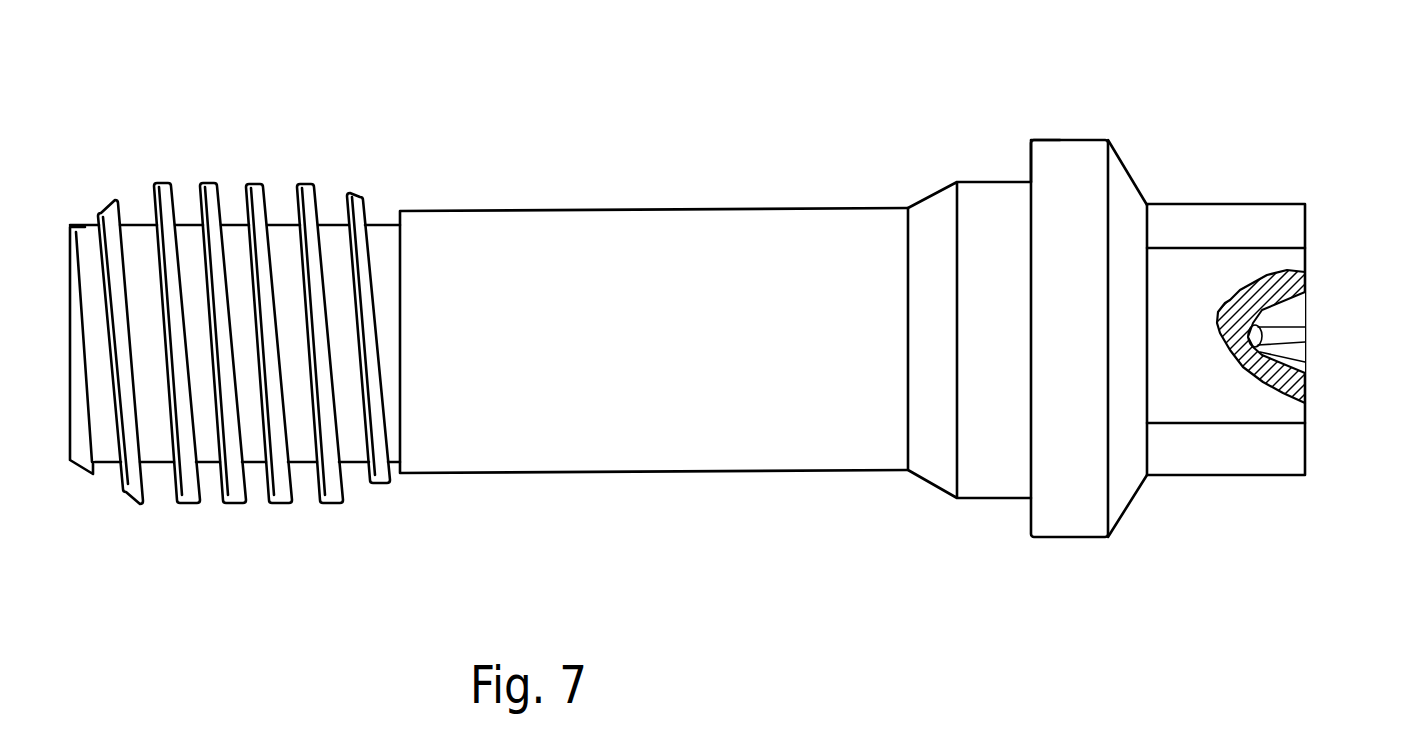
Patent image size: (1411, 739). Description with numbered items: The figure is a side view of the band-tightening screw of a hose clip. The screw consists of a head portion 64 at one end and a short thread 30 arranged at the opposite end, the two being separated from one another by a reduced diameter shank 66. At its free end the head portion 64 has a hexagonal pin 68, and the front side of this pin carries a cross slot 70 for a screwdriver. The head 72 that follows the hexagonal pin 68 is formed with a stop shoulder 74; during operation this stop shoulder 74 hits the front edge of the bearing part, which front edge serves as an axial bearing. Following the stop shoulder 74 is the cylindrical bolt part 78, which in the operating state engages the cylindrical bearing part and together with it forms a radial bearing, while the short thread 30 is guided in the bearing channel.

The short thread 30 is at (258, 218).
The reduced diameter shank 66 is at (722, 248).
The cylindrical bolt part 78 is at (985, 447).
The head 72 is at (1068, 487).
The stop shoulder 74 is at (1028, 163).
The head portion 64 is at (1245, 352).
The hexagonal pin 68 is at (1223, 448).
The cross slot 70 is at (1290, 337).